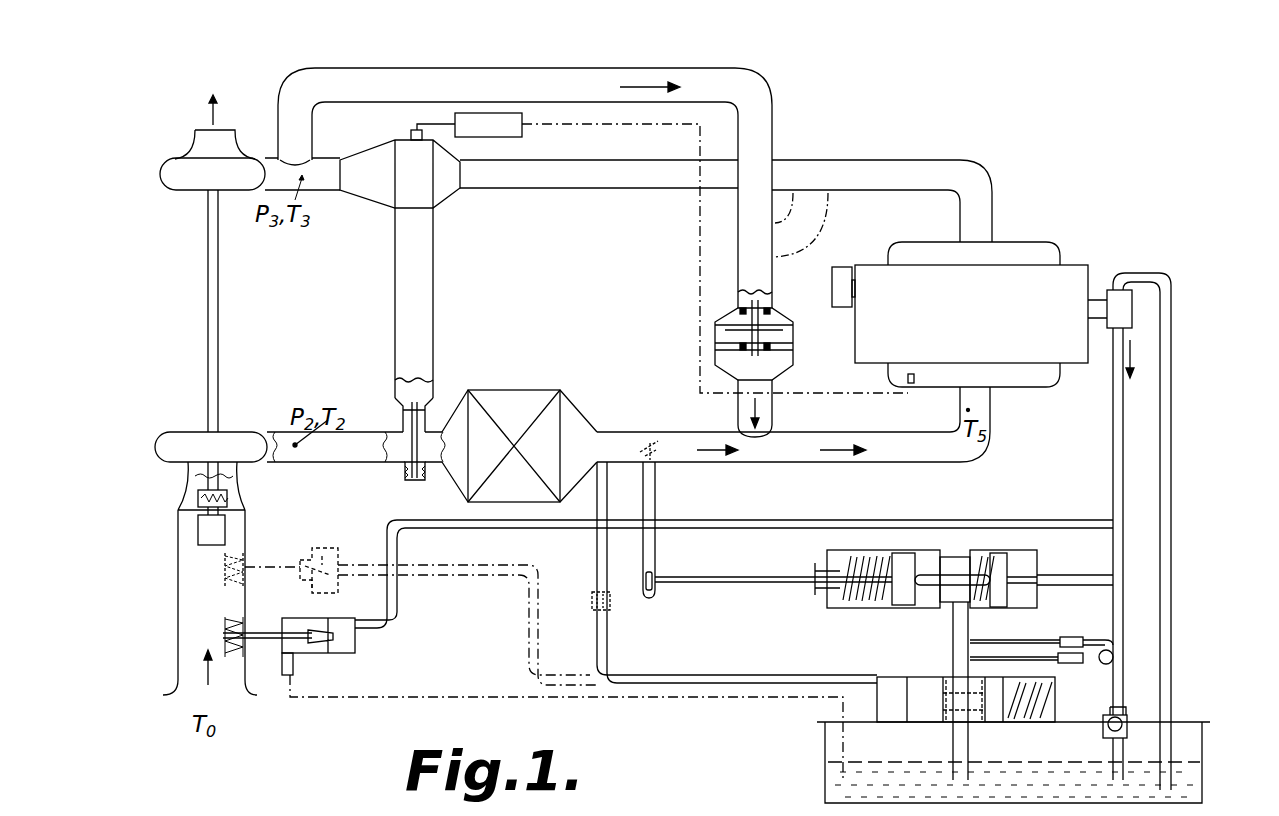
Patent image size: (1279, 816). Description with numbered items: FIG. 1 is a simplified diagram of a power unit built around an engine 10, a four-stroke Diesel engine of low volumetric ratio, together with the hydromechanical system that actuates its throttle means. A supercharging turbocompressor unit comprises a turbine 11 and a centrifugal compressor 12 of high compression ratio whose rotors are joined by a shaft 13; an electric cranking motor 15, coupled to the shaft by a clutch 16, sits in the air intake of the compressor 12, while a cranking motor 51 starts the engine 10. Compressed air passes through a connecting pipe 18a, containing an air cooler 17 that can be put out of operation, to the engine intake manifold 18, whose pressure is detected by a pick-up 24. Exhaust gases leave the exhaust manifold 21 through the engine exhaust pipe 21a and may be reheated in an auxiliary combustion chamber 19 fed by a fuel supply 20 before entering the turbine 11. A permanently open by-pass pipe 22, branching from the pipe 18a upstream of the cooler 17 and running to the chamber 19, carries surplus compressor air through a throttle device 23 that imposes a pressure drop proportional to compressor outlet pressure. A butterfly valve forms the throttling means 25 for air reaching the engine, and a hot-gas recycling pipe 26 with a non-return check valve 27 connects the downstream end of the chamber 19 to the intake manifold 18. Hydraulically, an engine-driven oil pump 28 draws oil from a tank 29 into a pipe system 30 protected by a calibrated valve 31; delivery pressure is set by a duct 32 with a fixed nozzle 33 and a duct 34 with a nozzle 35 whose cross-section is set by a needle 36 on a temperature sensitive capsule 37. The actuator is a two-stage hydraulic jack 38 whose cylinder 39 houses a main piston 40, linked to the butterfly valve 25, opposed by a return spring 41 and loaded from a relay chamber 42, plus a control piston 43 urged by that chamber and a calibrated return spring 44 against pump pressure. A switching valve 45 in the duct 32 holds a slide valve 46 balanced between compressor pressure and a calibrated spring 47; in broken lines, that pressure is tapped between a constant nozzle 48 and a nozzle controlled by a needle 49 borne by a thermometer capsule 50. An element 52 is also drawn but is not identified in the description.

The engine 10 is at (1097, 246).
The turbine 11 is at (192, 176).
The compressor 12 is at (183, 448).
The shaft 13 is at (208, 296).
The electric cranking motor 15 is at (207, 535).
The clutch 16 is at (228, 492).
The air cooler 17 is at (505, 403).
The engine intake manifold 18 is at (1010, 382).
The connecting pipe 18a is at (778, 450).
The auxiliary combustion chamber 19 is at (367, 180).
The fuel supply 20 is at (500, 131).
The exhaust manifold 21 is at (1012, 252).
The engine exhaust pipe 21a is at (840, 172).
The by-pass pipe 22 is at (433, 305).
The throttle device 23 is at (396, 406).
The pick-up 24 is at (912, 385).
The throttling means 25 is at (652, 437).
The hot-gas recycling pipe 26 is at (757, 125).
The non-return check valve 27 is at (726, 311).
The oil pump 28 is at (1118, 305).
The tank 29 is at (1203, 752).
The pipe system 30 is at (1113, 460).
The calibrated valve 31 is at (1120, 718).
The duct 32 is at (1000, 640).
The nozzle 33 is at (1086, 640).
The duct 34 is at (495, 527).
The nozzle 35 is at (355, 648).
The needle 36 is at (318, 648).
The temperature sensitive capsule 37 is at (240, 622).
The two-stage hydraulic jack 38 is at (857, 612).
The cylinder 39 is at (838, 606).
The main piston 40 is at (905, 560).
The return spring 41 is at (882, 597).
The relay chamber 42 is at (927, 602).
The control piston 43 is at (996, 580).
The calibrated return spring 44 is at (985, 555).
The switching valve 45 is at (1026, 728).
The slide valve 46 is at (926, 714).
The calibrated spring 47 is at (1048, 695).
The nozzle 48 is at (608, 603).
The needle 49 is at (305, 566).
The thermometer capsule 50 is at (262, 545).
The cranking motor 51 is at (855, 254).
The actuator rod 52 is at (656, 557).